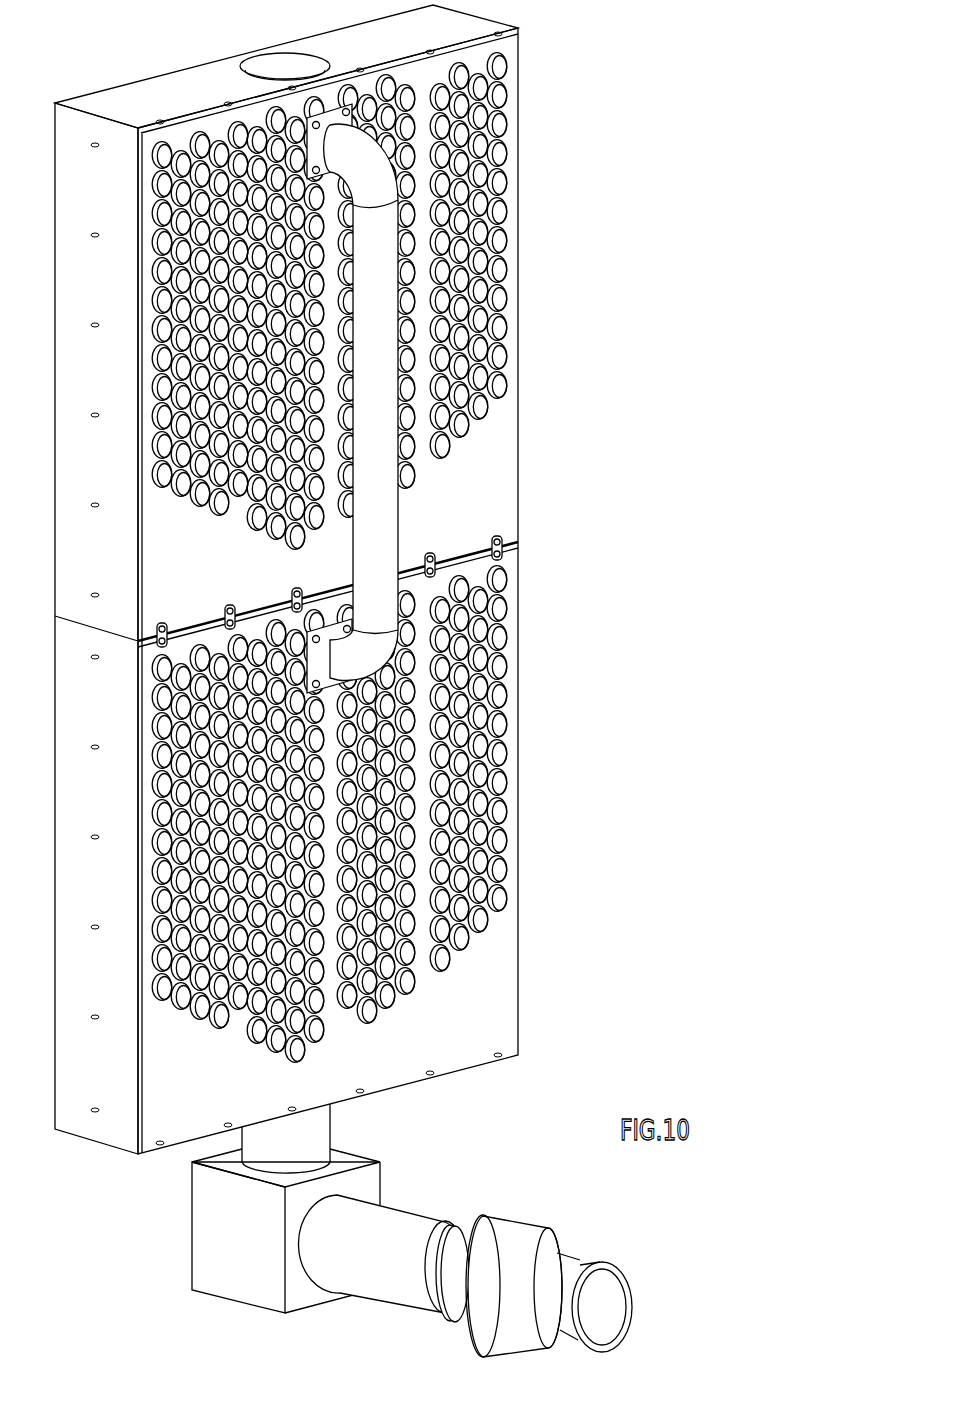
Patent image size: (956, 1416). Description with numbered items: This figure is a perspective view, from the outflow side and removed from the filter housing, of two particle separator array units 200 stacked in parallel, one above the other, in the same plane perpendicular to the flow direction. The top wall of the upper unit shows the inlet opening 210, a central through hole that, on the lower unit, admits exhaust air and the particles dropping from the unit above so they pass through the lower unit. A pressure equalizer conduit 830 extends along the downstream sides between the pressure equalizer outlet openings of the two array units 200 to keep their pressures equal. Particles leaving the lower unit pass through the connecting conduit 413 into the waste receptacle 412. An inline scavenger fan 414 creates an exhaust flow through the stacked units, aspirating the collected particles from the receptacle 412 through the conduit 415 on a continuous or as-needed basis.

The particle separator array unit 200 is at (517, 452).
The inlet opening 210 is at (272, 60).
The pressure equalizer conduit 830 is at (382, 537).
The waste receptacle 412 is at (205, 1237).
The connecting conduit 413 is at (320, 1140).
The conduit 415 is at (390, 1220).
The inline scavenger fan 414 is at (557, 1245).